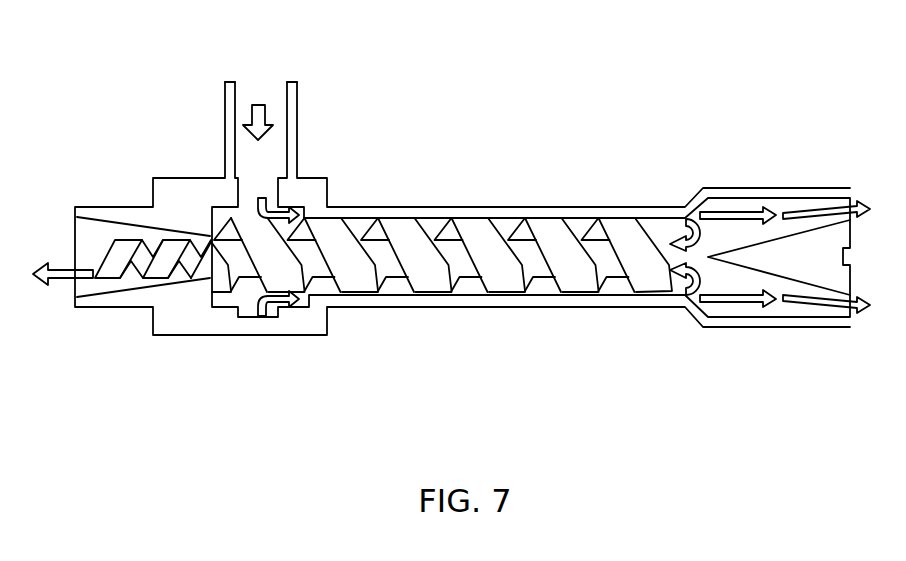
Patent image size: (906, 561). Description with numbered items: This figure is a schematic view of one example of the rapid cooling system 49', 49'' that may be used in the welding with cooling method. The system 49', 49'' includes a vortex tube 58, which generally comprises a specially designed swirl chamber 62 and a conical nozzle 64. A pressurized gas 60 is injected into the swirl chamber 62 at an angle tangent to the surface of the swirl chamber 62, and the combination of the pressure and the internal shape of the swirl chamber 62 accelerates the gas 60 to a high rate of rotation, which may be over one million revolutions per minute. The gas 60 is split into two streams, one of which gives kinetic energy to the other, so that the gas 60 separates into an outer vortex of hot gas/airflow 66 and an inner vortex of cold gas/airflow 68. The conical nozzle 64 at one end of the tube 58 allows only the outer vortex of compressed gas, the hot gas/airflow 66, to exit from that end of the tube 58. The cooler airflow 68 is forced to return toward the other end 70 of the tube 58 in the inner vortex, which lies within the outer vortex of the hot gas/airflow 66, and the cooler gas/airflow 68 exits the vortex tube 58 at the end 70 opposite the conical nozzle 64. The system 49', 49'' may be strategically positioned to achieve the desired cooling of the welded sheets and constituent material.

The rapid cooling system 49' is at (452, 207).
The rapid cooling system 49'' is at (452, 208).
The vortex tube 58 is at (120, 205).
The pressurized gas 60 is at (253, 105).
The swirl chamber 62 is at (221, 212).
The conical nozzle 64 is at (795, 252).
The hot gas/airflow 66 is at (290, 192).
The cold gas/airflow 68 is at (672, 232).
The end of the tube 70 is at (87, 248).